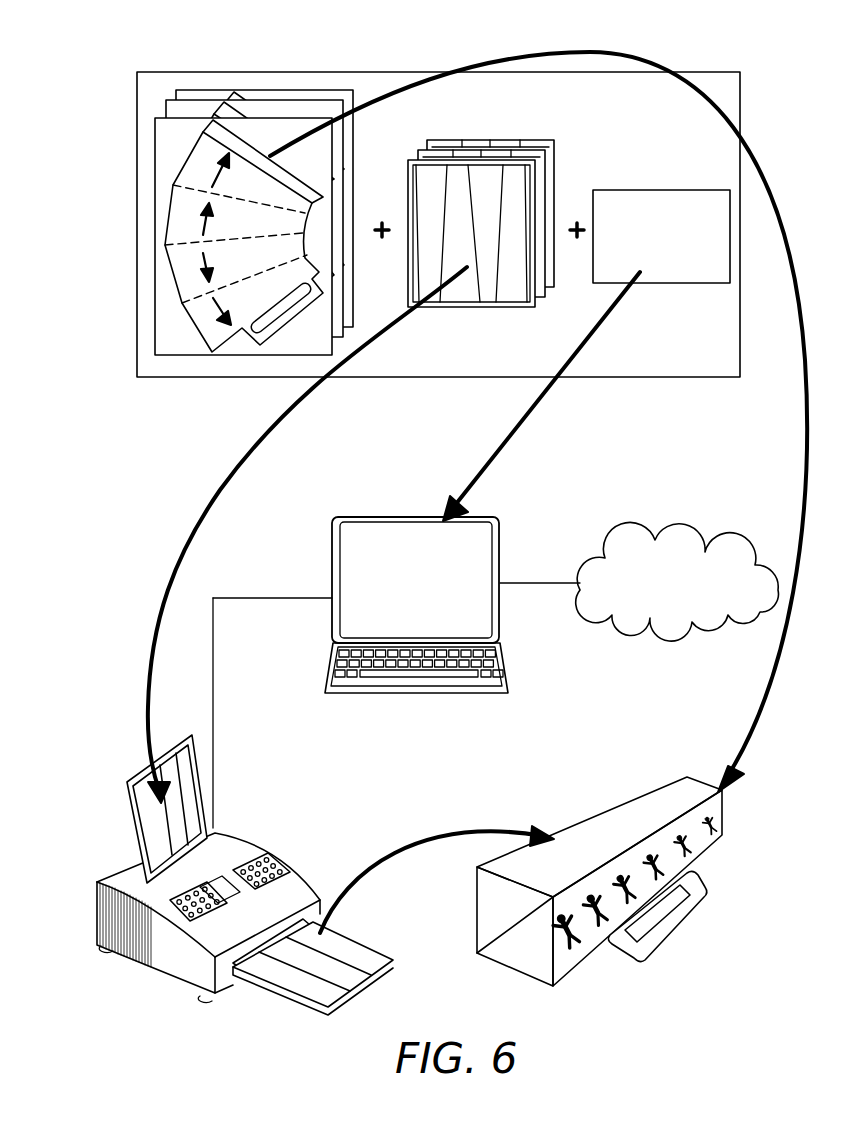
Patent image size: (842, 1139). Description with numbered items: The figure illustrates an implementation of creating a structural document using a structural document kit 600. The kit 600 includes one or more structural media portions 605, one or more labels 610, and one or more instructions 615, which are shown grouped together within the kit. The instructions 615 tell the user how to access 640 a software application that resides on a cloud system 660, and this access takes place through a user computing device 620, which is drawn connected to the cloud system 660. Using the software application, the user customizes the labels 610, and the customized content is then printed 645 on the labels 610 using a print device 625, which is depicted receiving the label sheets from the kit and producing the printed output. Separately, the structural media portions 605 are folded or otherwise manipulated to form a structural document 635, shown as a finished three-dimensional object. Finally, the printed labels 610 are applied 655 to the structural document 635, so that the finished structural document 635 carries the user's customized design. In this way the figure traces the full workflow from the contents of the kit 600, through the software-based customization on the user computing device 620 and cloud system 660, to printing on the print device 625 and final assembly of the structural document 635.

The structural document kit 600 is at (292, 72).
The structural media portions 605 is at (229, 345).
The labels 610 is at (556, 168).
The instructions 615 is at (666, 190).
The user computing device 620 is at (410, 517).
The print device 625 is at (282, 862).
The structural document 635 is at (700, 848).
The access 640 is at (522, 428).
The printing 645 is at (213, 495).
The applying 655 is at (438, 827).
The cloud system 660 is at (695, 537).